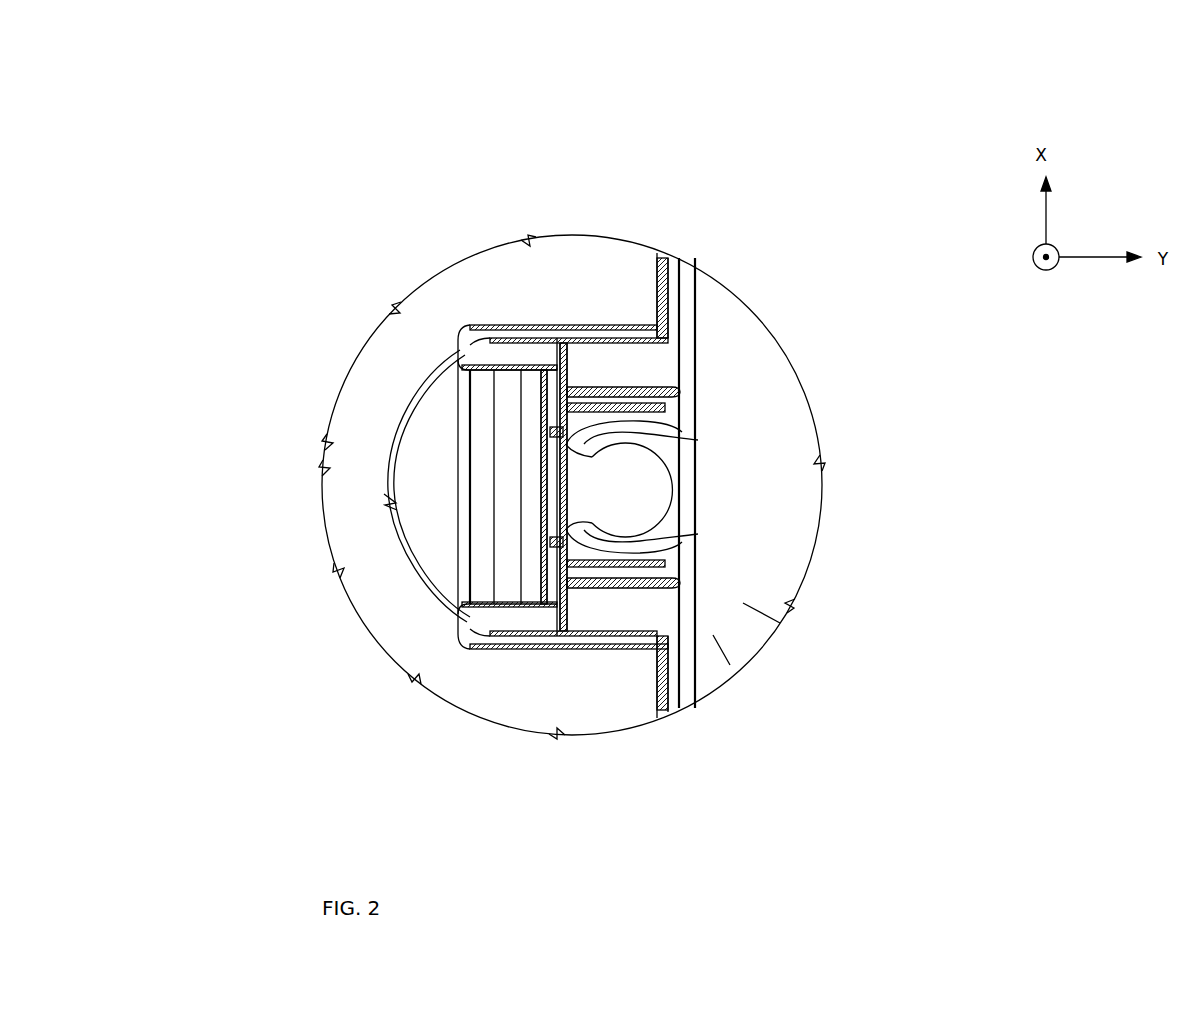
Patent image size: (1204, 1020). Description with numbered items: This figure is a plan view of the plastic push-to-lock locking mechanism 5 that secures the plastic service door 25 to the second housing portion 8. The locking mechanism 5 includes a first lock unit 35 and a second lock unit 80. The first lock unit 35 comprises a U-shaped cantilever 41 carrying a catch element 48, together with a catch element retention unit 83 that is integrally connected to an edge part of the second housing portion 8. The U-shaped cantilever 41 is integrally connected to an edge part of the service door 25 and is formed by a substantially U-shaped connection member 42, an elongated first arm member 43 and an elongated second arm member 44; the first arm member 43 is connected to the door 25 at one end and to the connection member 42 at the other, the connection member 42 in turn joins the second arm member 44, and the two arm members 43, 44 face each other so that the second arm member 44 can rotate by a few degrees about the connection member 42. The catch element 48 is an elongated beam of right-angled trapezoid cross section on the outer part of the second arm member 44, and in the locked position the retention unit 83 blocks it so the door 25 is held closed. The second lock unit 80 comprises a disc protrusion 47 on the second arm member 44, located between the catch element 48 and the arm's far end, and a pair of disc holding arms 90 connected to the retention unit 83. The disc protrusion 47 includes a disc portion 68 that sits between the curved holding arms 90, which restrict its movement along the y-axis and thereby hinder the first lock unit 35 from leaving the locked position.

The locking mechanism 5 is at (740, 84).
The second housing portion 8 is at (743, 367).
The service door 25 is at (363, 377).
The first lock unit 35 is at (353, 200).
The U-shaped cantilever 41 is at (480, 508).
The U-shaped connection member 42 is at (503, 538).
The first arm member 43 is at (481, 508).
The second arm member 44 is at (482, 644).
The disc protrusion 47 is at (658, 517).
The catch element 48 is at (575, 385).
The disc portion 68 is at (633, 507).
The second lock unit 80 is at (828, 188).
The catch element retention unit 83 is at (735, 662).
The disc holding arms 90 is at (700, 535).